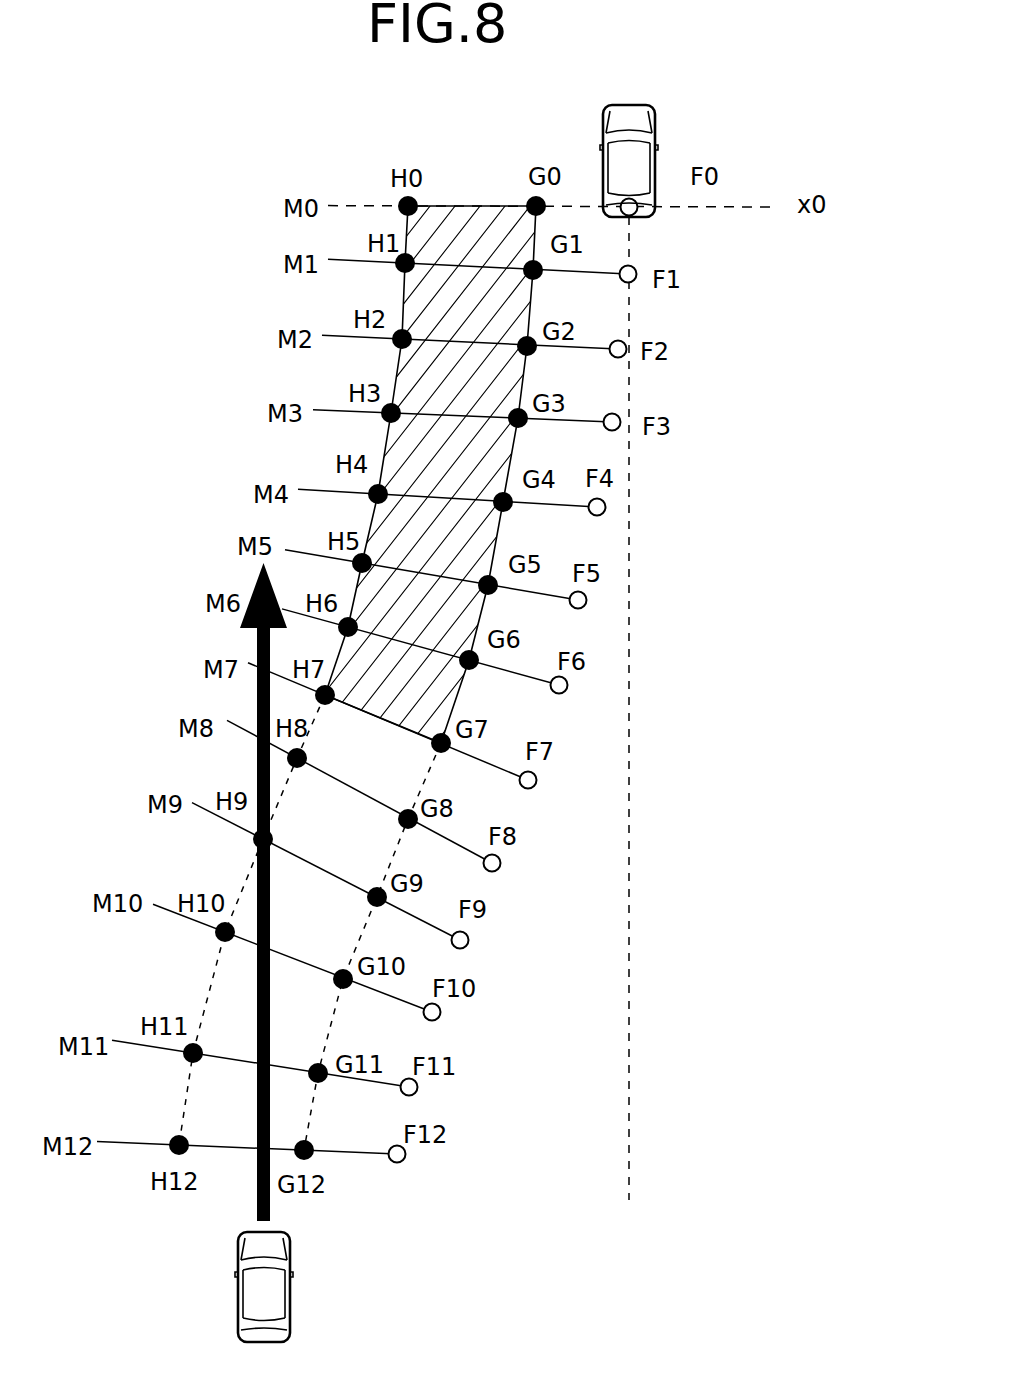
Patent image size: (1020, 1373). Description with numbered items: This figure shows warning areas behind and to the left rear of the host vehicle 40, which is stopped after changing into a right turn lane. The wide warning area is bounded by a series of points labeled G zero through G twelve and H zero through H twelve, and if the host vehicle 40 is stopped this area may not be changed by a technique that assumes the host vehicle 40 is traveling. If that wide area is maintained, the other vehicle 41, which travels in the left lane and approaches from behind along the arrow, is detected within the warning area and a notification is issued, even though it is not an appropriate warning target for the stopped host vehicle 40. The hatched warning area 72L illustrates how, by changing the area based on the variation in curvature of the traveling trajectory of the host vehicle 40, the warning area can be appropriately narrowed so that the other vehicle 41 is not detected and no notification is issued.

The host vehicle 40 is at (603, 130).
The other vehicle 41 is at (290, 1288).
The warning area 72L is at (481, 228).